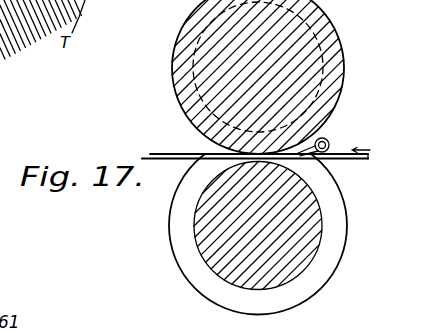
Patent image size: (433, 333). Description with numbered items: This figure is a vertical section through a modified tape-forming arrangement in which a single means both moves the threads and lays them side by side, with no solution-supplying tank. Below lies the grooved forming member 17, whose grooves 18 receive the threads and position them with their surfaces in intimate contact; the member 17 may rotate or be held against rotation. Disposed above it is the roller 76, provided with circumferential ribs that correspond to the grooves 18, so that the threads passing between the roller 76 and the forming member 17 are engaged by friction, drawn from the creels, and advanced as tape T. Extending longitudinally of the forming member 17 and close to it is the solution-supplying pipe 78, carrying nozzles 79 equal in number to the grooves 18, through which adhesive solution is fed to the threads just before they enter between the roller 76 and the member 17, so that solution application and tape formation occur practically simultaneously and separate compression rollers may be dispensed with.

The roller 76 is at (340, 44).
The nozzles 79 is at (325, 138).
The solution-supplying pipe 78 is at (330, 147).
The grooves 18 is at (315, 255).
The forming member 17 is at (310, 235).
The plate T is at (366, 160).